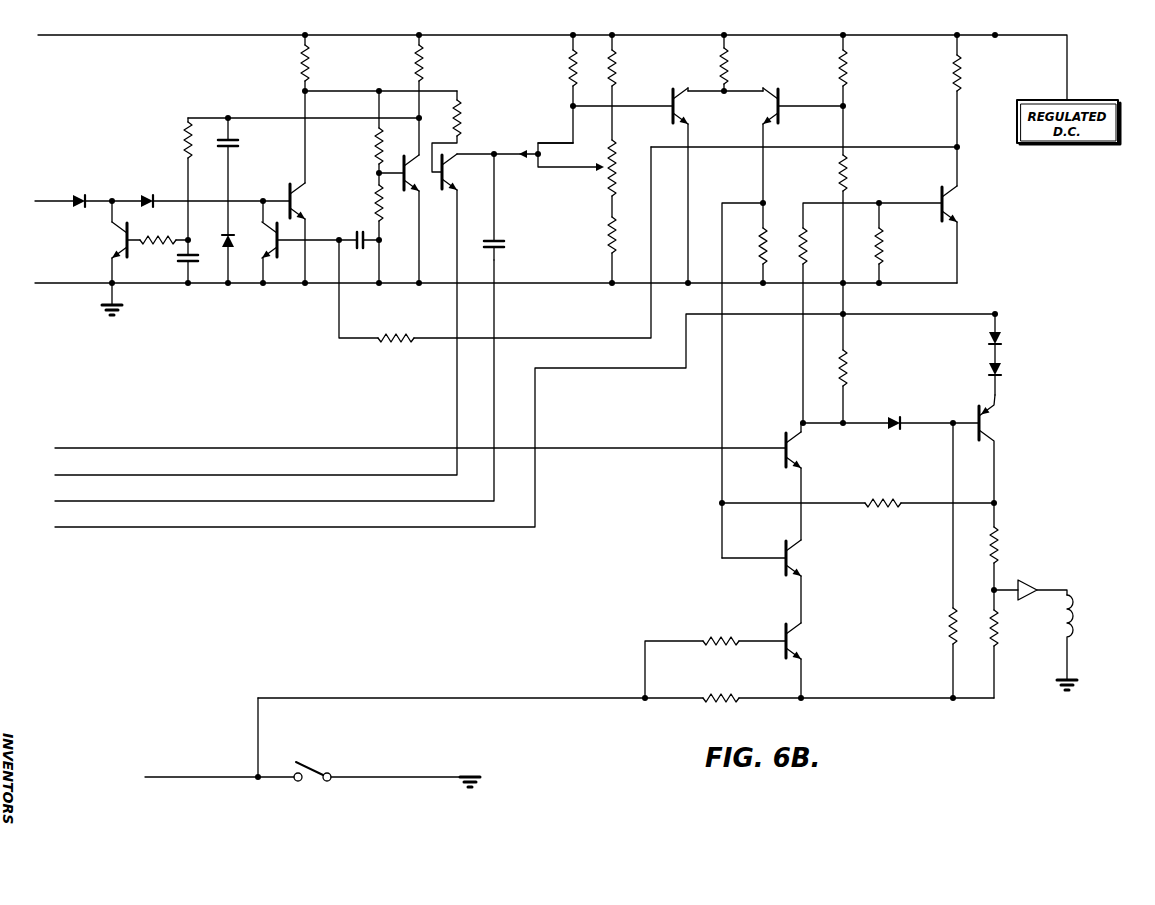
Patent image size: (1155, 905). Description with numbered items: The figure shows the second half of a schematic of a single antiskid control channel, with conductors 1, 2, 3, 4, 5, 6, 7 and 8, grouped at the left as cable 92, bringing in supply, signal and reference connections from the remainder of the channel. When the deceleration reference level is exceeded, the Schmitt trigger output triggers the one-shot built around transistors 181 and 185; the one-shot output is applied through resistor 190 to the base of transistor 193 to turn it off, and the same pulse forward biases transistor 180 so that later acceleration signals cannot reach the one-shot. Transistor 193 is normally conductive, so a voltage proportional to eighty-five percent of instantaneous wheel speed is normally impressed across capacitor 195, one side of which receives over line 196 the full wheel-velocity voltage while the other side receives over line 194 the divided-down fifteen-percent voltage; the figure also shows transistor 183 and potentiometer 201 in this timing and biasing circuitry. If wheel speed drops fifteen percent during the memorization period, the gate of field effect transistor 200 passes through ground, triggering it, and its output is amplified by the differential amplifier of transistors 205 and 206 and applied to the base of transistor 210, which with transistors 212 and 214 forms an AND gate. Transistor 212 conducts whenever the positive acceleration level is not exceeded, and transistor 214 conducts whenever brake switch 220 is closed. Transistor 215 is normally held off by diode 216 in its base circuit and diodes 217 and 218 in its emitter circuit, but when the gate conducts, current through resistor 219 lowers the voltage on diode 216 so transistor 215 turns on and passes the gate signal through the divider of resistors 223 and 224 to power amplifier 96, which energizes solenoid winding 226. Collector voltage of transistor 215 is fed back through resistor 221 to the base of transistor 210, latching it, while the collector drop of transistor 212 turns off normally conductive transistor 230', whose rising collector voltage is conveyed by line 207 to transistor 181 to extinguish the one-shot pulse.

The supply conductor 1 is at (545, 63).
The input conductor 2 is at (155, 201).
The common conductor 3 is at (488, 283).
The conductor 4 is at (411, 448).
The conductor 5 is at (247, 337).
The conductor 6 is at (265, 385).
The conductor 7 is at (516, 425).
The brake switch conductor 8 is at (211, 778).
The cable 92 is at (105, 421).
The power amplifier 96 is at (1022, 585).
The transistor 180 is at (127, 240).
The one-shot transistor 181 is at (290, 242).
The transistor 183 is at (303, 197).
The transistor 185 is at (410, 173).
The resistor 190 is at (464, 128).
The transistor 193 is at (450, 174).
The line 194 is at (456, 405).
The capacitor 195 is at (504, 243).
The line 196 is at (496, 362).
The field effect transistor 200 is at (571, 154).
The potentiometer 201 is at (607, 166).
The transistor 205 is at (674, 97).
The transistor 206 is at (784, 97).
The line 207 is at (576, 337).
The transistor 210 is at (791, 560).
The transistor 212 is at (792, 452).
The transistor 214 is at (790, 641).
The transistor 215 is at (987, 428).
The diode 216 is at (896, 415).
The diode 217 is at (1003, 340).
The diode 218 is at (1003, 368).
The resistor 219 is at (845, 371).
The brake switch 220 is at (303, 760).
The resistor 221 is at (887, 498).
The resistor 223 is at (1000, 537).
The resistor 224 is at (1000, 637).
The solenoid winding 226 is at (1072, 632).
The transistor 230' is at (922, 159).